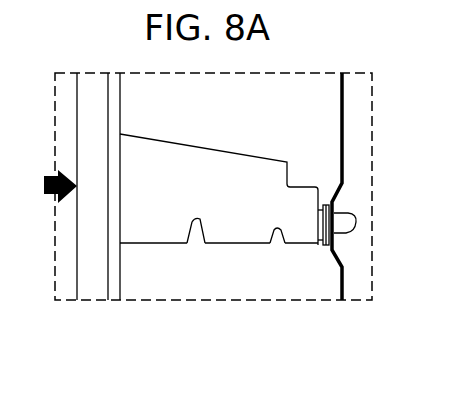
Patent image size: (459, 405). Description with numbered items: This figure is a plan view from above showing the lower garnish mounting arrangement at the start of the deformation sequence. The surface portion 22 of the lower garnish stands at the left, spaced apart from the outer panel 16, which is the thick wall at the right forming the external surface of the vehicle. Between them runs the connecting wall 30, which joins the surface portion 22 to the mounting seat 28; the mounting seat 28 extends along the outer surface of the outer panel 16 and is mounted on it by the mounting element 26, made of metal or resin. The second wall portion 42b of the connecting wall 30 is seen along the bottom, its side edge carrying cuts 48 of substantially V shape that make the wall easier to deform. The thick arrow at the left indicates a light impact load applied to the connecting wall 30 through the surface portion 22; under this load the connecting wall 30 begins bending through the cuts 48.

The outer panel 16 is at (344, 157).
The surface portion 22 is at (77, 258).
The mounting element 26 is at (345, 230).
The mounting seat 28 is at (326, 204).
The connecting wall 30 is at (240, 137).
The second wall portion 42b is at (150, 228).
The cut 48 is at (205, 244).